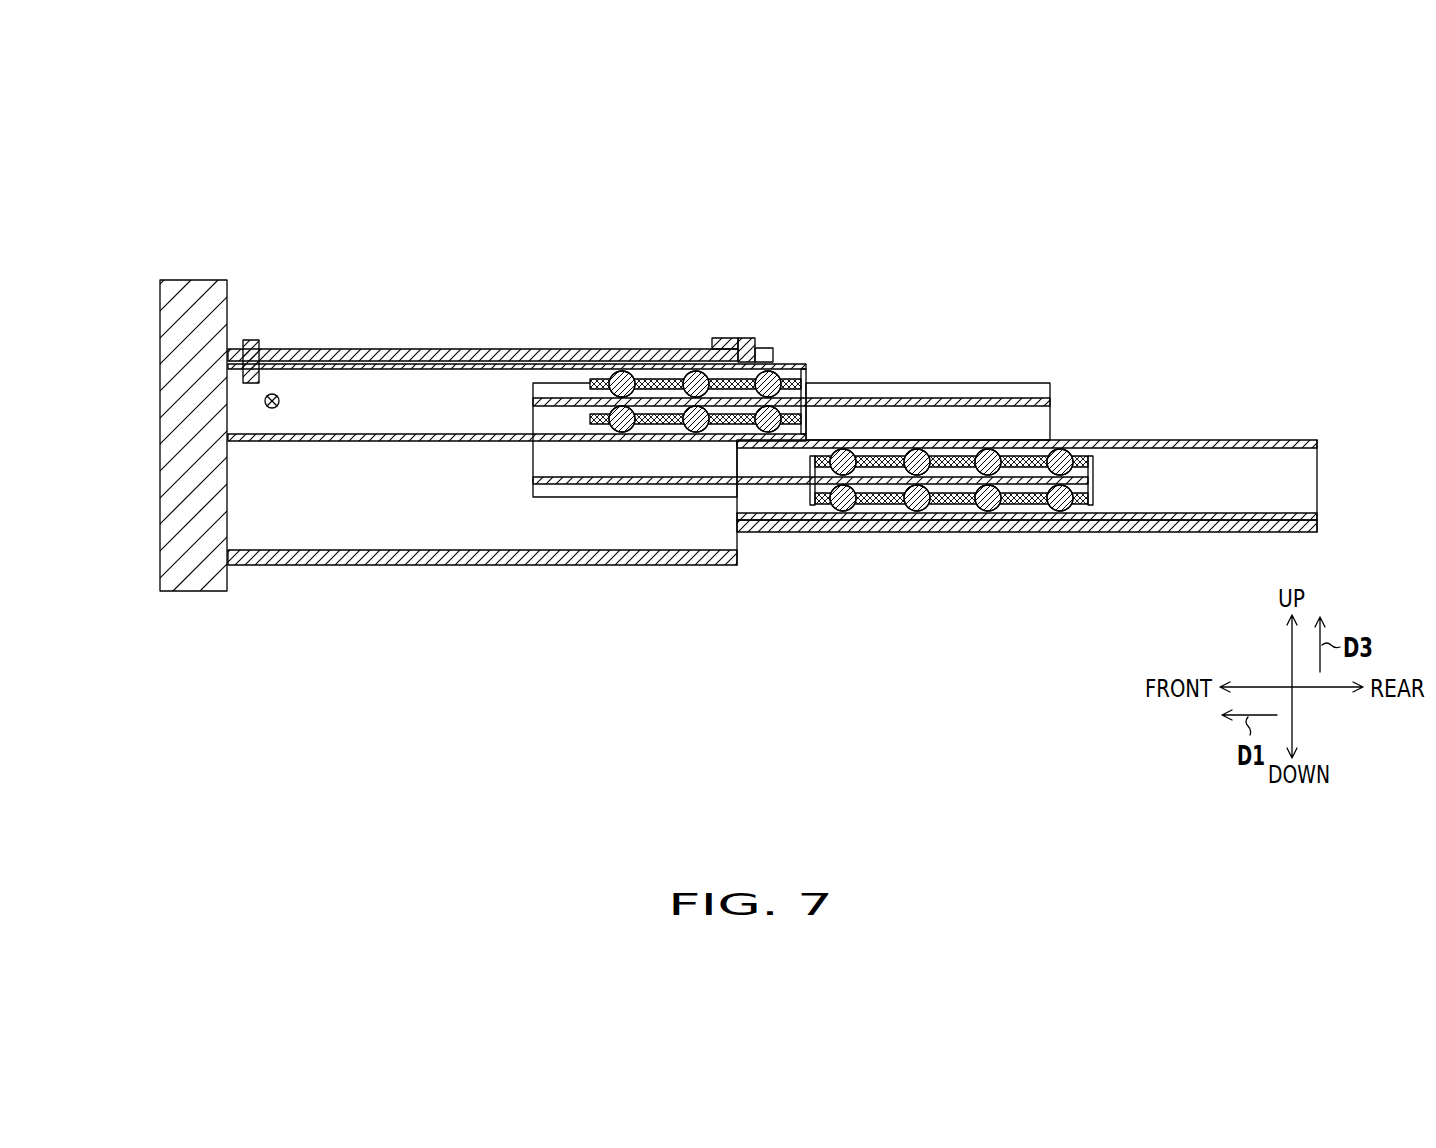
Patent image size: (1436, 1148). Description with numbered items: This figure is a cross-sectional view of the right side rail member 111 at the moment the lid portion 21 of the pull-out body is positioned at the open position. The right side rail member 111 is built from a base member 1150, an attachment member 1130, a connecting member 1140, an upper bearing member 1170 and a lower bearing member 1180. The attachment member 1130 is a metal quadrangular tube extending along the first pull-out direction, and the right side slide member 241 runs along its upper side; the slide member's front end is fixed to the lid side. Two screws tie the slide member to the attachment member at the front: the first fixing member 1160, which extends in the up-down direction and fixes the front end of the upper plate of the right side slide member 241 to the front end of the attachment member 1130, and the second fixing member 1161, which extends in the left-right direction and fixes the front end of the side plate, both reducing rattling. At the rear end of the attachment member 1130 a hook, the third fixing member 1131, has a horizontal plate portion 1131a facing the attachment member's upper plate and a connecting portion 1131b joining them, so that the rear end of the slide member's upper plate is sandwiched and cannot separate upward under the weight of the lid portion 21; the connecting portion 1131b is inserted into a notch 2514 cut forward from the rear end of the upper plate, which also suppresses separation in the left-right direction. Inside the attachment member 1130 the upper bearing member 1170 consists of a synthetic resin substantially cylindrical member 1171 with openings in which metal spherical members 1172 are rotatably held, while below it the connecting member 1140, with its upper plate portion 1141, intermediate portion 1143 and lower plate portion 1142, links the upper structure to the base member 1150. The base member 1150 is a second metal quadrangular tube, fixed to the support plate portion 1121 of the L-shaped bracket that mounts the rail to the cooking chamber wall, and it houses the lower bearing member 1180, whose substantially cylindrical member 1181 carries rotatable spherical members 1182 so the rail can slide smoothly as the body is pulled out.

The lid portion 21 is at (160, 410).
The right side slide member 241 is at (382, 348).
The first fixing member 1160 is at (252, 338).
The second fixing member 1161 is at (270, 393).
The right side rail member 111 is at (888, 163).
The attachment member 1130 is at (513, 362).
The third fixing member 1131 is at (867, 155).
The horizontal plate portion 1131a is at (737, 343).
The connecting portion 1131b is at (743, 343).
The notch 2514 is at (777, 337).
The upper bearing member 1170 is at (685, 197).
The substantially cylindrical member 1171 is at (668, 373).
The spherical members 1172 is at (620, 372).
The connecting member 1140 is at (1087, 187).
The upper plate portion 1141 is at (860, 398).
The intermediate portion 1143 is at (913, 428).
The lower plate portion 1142 is at (950, 477).
The lower bearing member 1180 is at (900, 678).
The substantially cylindrical member 1181 is at (880, 503).
The spherical members 1182 is at (843, 505).
The base member 1150 is at (1097, 532).
The support plate portion 1121 is at (943, 532).